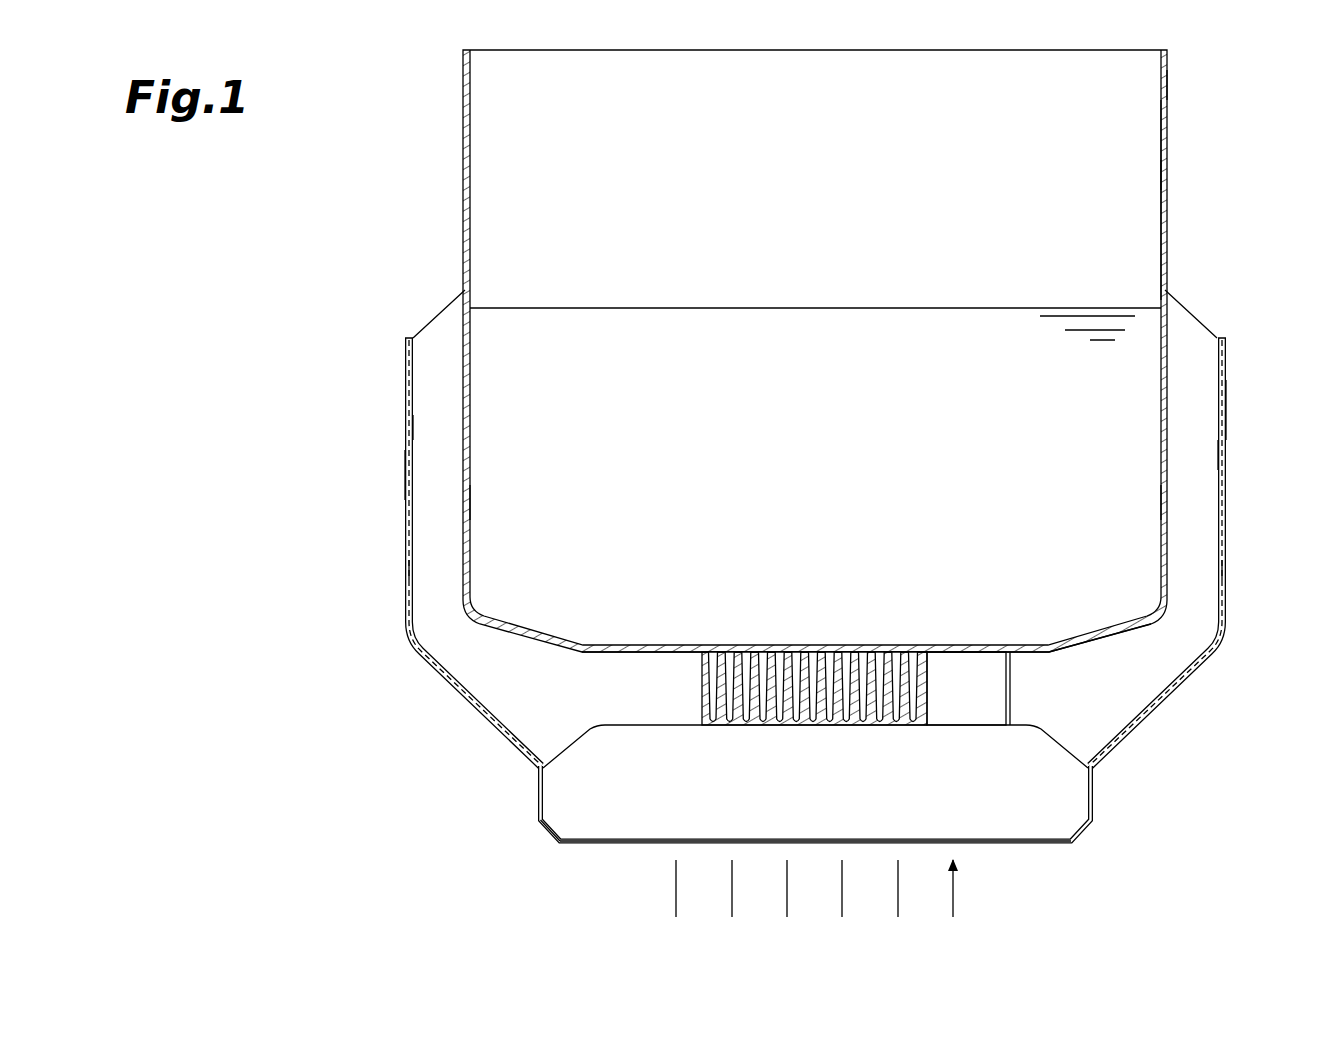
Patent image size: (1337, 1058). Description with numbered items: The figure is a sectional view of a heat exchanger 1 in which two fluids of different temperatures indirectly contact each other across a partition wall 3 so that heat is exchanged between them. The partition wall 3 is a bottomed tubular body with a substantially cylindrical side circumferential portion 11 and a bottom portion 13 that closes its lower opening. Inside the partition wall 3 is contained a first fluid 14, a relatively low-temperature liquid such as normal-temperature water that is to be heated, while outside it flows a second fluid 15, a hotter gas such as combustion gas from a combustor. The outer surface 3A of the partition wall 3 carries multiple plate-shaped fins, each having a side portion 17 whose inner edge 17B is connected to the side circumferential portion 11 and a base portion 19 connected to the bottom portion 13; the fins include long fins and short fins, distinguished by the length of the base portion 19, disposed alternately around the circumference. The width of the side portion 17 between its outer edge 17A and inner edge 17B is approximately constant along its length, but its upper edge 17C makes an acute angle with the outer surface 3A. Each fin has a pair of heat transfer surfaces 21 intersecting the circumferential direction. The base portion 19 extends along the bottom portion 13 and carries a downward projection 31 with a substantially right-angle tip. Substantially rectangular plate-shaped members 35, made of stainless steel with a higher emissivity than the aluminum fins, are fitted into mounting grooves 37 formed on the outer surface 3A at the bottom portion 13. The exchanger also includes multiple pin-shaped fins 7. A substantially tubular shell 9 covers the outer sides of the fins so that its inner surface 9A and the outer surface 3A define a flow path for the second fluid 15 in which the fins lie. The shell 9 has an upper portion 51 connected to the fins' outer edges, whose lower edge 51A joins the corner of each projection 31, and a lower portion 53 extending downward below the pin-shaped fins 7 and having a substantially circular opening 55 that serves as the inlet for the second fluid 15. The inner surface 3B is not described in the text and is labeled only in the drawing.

The heat exchanger 1 is at (410, 100).
The partition wall 3 is at (1182, 132).
The outer surface of the partition wall 3A is at (1168, 175).
The outer surface of tank 3B is at (1156, 80).
The pin-shaped fins 7 is at (800, 735).
The shell 9 is at (1234, 412).
The inner surface of the shell 9A is at (413, 436).
The side circumferential portion 11 is at (1177, 237).
The bottom portion 13 is at (1133, 632).
The first fluid 14 is at (833, 481).
The second fluid 15 is at (832, 949).
The side portion 17 is at (436, 534).
The outer edge of the side portion 17A is at (412, 568).
The inner edge of the side portion 17B is at (470, 504).
The upper edge of the side portion 17C is at (432, 315).
The base portion 19 is at (531, 716).
The heat transfer surfaces 21 is at (428, 372).
The projection 31 is at (545, 770).
The plate-shaped member 35 is at (968, 712).
The mounting groove 37 is at (948, 655).
The upper portion of the shell 51 is at (403, 477).
The lower edge of the upper portion 51A is at (538, 778).
The lower portion of the shell 53 is at (546, 838).
The opening 55 is at (582, 845).